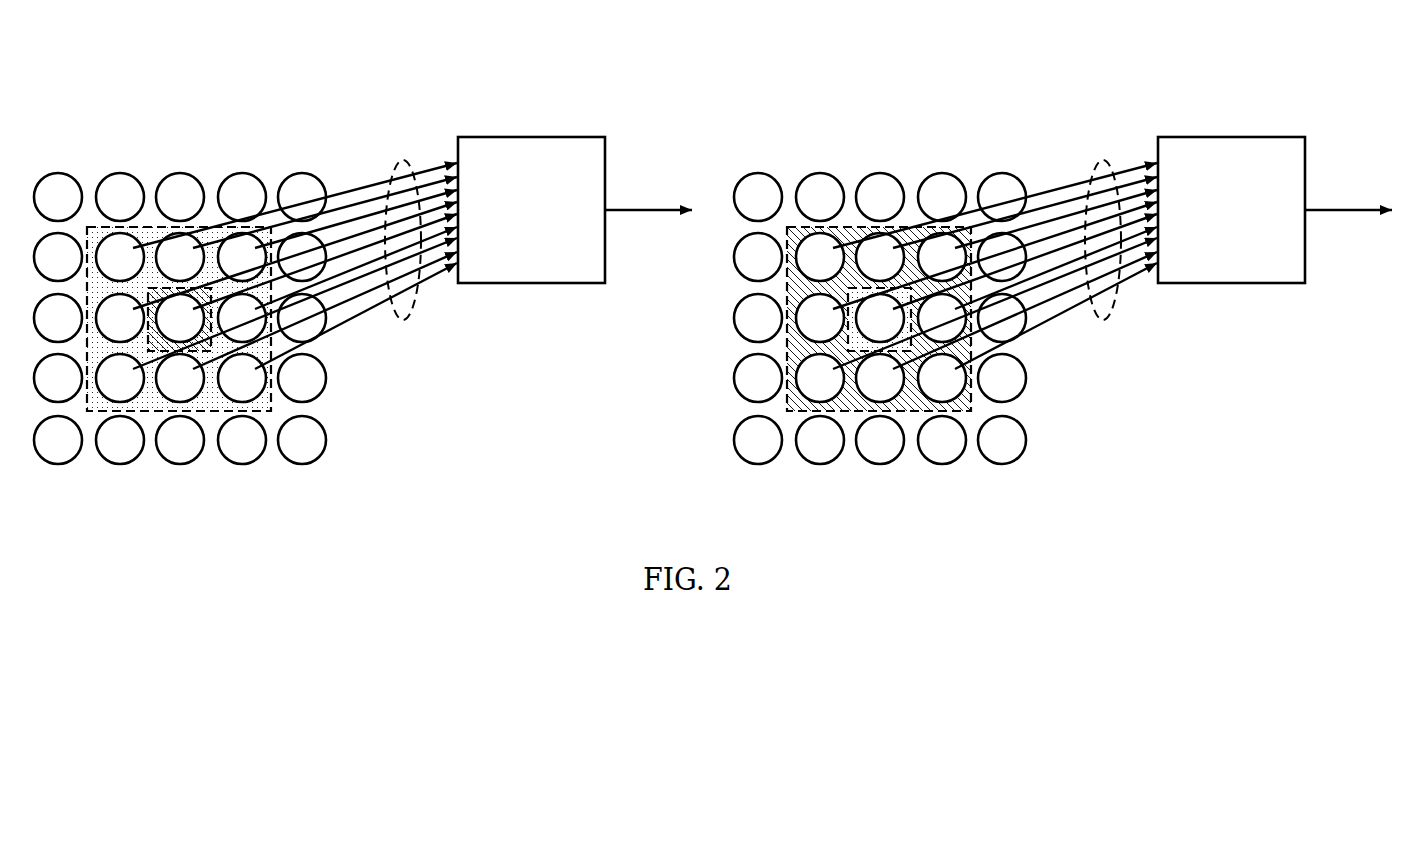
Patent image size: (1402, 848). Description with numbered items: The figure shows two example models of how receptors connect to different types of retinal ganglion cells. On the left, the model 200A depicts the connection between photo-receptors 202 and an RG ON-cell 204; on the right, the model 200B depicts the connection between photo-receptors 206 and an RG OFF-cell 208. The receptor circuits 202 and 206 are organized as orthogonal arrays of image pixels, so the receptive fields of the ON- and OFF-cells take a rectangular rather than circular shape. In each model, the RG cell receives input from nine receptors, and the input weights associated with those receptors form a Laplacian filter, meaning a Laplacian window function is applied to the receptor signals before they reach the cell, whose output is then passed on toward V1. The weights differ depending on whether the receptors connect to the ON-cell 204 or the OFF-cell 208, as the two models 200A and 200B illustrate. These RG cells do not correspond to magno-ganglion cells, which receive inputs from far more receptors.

The model of connection between photo-receptors and RG ON-cell 200A is at (380, 92).
The model of connection between photo-receptors and RG OFF-cell 200B is at (1087, 92).
The photo-receptors 202 is at (186, 95).
The RG ON-cell 204 is at (543, 137).
The photo-receptors 206 is at (892, 95).
The RG OFF-cell 208 is at (1243, 137).